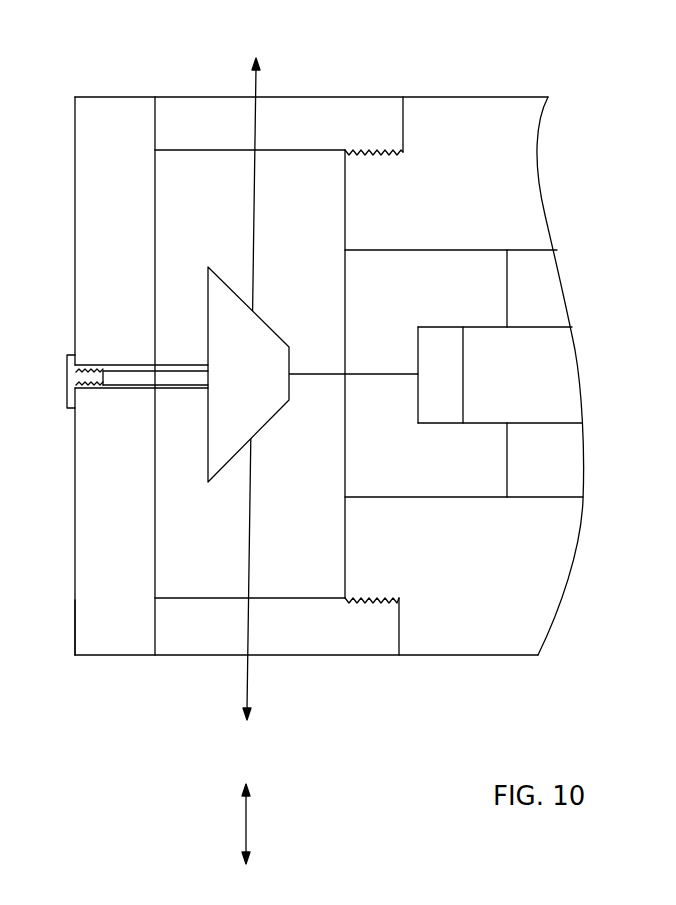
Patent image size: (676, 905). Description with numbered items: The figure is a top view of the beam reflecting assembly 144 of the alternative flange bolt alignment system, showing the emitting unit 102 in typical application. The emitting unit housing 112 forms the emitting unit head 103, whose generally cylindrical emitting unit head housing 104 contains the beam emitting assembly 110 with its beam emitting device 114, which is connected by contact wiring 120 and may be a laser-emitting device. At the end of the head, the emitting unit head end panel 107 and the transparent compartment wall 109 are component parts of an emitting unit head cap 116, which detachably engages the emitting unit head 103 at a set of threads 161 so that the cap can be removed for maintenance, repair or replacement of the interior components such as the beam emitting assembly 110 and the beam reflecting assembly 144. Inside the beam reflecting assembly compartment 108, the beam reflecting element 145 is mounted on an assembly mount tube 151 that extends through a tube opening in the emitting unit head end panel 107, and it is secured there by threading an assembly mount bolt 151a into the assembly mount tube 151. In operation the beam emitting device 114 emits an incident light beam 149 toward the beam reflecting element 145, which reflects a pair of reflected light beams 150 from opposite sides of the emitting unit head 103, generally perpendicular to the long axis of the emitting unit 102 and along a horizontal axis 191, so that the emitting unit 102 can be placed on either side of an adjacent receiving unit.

The emitting unit 102 is at (433, 69).
The emitting unit head 103 is at (504, 664).
The emitting unit head housing 104 is at (447, 658).
The emitting unit head end panel 107 is at (76, 108).
The beam reflecting assembly compartment 108 is at (212, 597).
The compartment wall 109 is at (184, 113).
The beam emitting assembly 110 is at (429, 243).
The emitting unit housing 112 is at (486, 85).
The beam emitting device 114 is at (556, 367).
The emitting unit head cap 116 is at (66, 645).
The contact wiring 120 is at (487, 250).
The beam reflecting assembly 144 is at (216, 234).
The beam reflecting element 145 is at (266, 313).
The incident light beam 149 is at (358, 372).
The reflected light beams 150 is at (258, 204).
The assembly mount tube 151 is at (133, 322).
The assembly mount bolt 151a is at (66, 405).
The threads 161 is at (371, 156).
The horizontal axis 191 is at (247, 820).